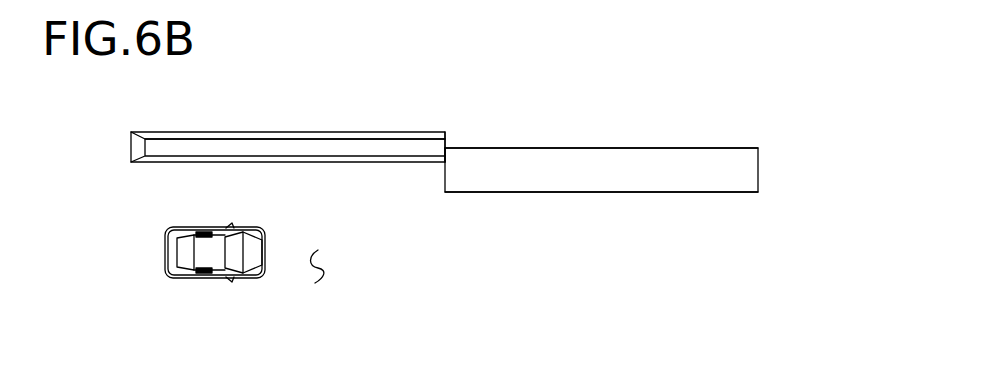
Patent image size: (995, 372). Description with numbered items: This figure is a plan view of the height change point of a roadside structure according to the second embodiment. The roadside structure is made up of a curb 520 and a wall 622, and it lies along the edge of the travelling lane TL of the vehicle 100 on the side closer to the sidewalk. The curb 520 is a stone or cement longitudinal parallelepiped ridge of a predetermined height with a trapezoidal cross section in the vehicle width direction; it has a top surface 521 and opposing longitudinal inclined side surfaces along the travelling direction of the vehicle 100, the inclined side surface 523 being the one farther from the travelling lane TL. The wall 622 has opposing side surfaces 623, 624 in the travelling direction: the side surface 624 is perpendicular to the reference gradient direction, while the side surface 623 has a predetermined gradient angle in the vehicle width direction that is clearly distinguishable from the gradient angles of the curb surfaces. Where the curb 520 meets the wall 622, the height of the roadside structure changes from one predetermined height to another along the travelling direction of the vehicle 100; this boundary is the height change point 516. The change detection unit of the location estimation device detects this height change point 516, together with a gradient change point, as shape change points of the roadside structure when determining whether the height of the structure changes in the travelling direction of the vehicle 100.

The curb 520 is at (305, 132).
The top surface 521 is at (328, 147).
The inclined side surface 523 is at (380, 132).
The height change point 516 is at (445, 152).
The wall 622 is at (617, 147).
The side surface 623 is at (632, 192).
The side surface 624 is at (690, 147).
The vehicle 100 is at (218, 278).
The travelling lane TL is at (318, 268).